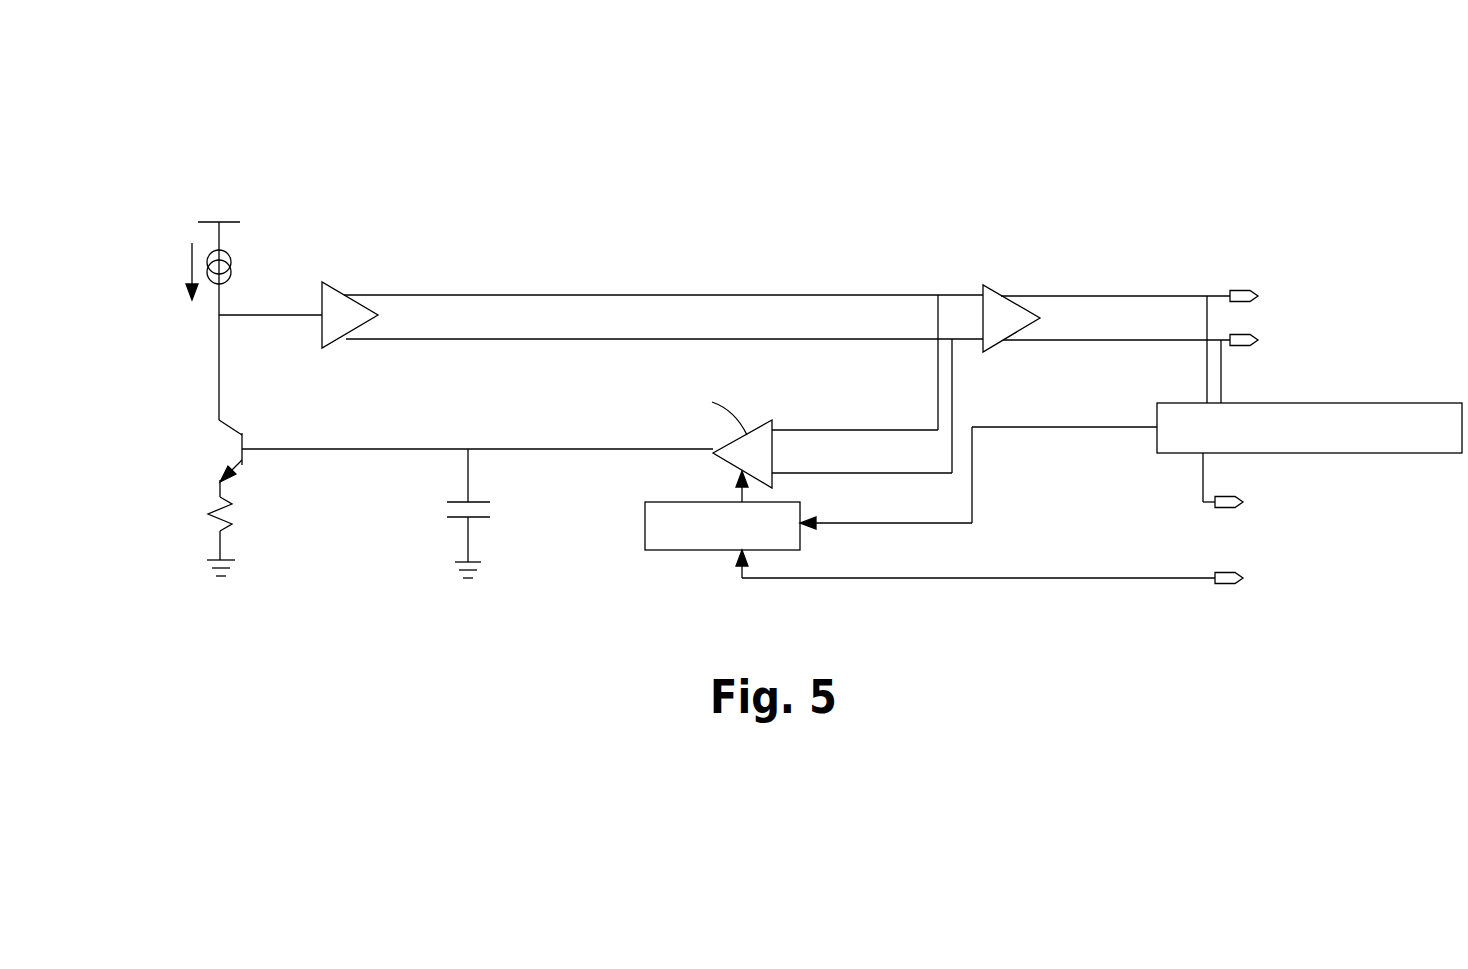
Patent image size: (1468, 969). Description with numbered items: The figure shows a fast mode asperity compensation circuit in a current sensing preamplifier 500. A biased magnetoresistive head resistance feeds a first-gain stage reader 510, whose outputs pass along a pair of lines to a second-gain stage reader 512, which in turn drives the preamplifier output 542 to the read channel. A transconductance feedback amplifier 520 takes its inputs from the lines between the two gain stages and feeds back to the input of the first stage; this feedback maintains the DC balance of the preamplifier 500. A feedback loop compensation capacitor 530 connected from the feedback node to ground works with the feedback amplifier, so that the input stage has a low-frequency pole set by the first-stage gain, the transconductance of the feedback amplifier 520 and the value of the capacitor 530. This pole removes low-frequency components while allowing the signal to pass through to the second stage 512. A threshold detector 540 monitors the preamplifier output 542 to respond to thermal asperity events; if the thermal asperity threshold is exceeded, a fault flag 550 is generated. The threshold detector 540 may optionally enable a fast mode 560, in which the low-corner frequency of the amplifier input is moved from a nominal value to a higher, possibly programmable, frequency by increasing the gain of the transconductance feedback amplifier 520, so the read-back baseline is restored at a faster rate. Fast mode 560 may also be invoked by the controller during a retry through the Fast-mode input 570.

The fast mode asperity compensation circuit 500 is at (614, 205).
The first-gain stage reader 510 is at (328, 283).
The second-gain stage reader 512 is at (985, 290).
The transconductance feedback amplifier 520 is at (760, 421).
The capacitor C1 530 is at (465, 552).
The threshold detector 540 is at (1355, 403).
The preamplifier output 542 is at (1158, 296).
The fault flag 550 is at (1253, 518).
The fast mode 560 is at (690, 552).
The Fast-mode input 570 is at (1253, 600).